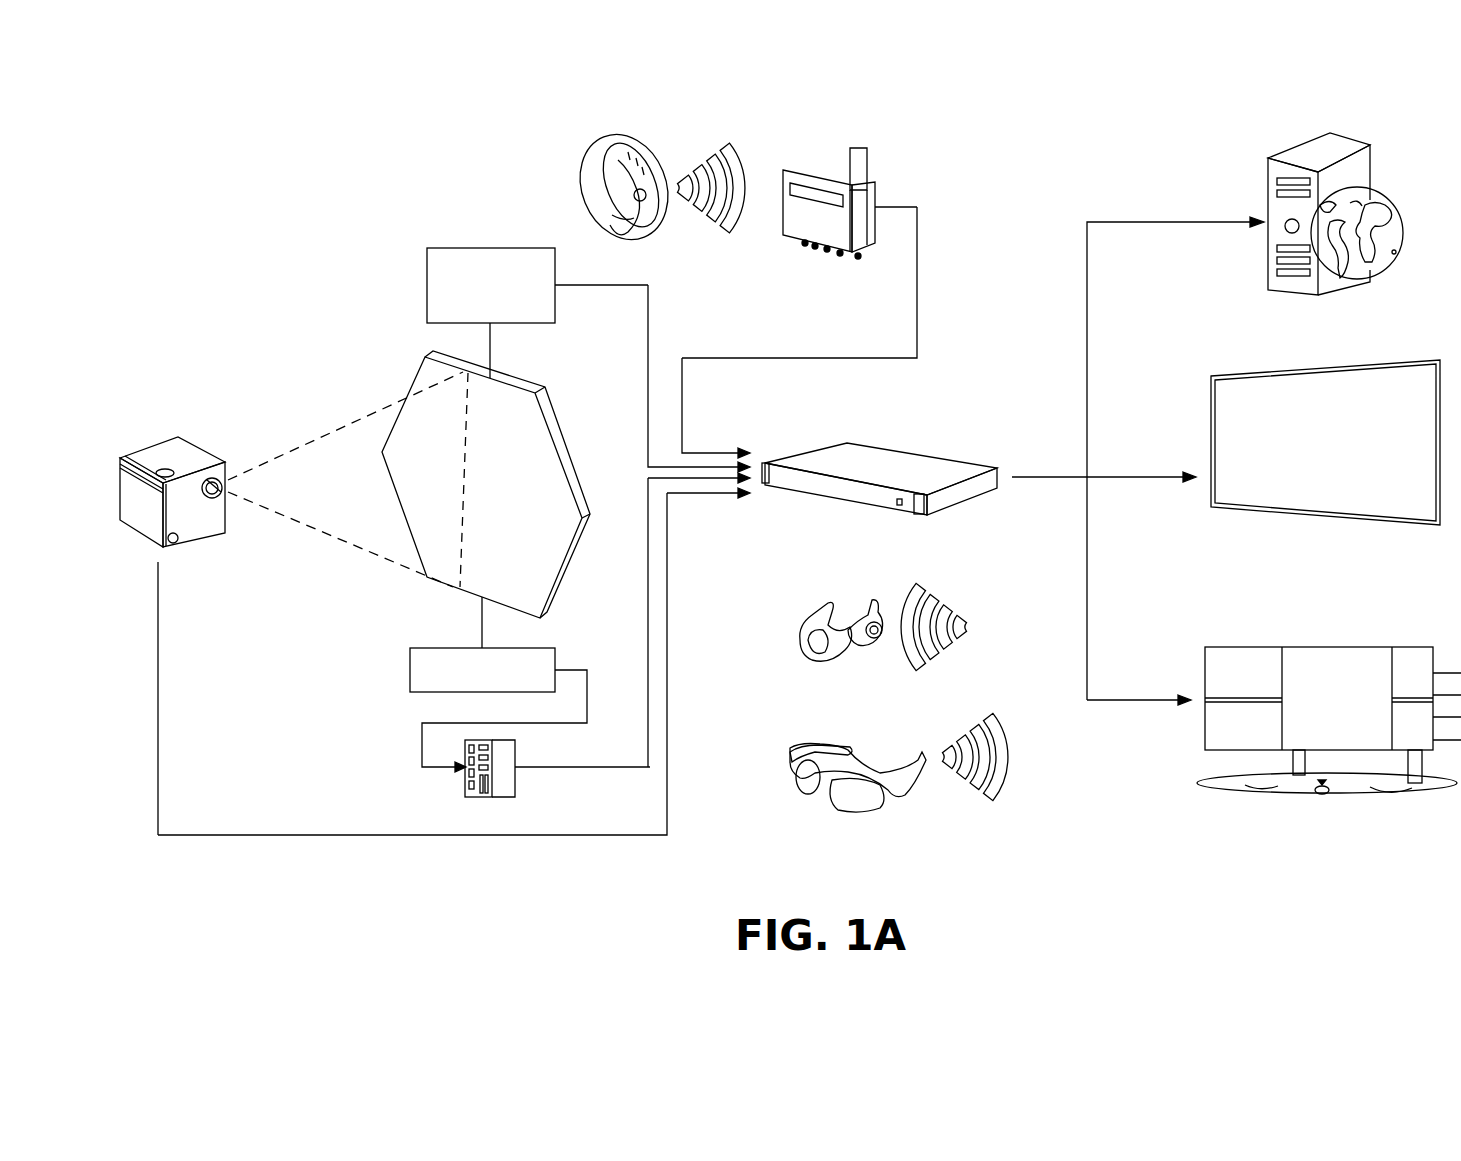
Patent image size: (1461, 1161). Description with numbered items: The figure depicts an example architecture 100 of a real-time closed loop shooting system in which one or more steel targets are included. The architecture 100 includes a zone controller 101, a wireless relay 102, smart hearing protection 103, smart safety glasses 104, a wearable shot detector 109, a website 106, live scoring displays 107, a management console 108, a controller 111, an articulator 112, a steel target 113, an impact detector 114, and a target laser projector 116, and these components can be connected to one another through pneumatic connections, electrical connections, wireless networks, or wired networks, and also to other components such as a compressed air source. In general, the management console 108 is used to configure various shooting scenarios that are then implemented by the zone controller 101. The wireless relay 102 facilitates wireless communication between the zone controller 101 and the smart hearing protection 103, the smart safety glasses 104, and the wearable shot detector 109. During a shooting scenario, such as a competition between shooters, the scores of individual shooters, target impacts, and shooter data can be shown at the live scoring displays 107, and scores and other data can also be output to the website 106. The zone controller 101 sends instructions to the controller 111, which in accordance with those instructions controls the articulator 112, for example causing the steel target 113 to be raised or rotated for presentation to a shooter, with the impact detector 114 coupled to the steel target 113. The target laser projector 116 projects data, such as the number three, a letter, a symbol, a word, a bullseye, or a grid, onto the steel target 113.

The architecture 100 is at (262, 120).
The zone controller 101 is at (835, 491).
The wireless relay 102 is at (808, 232).
The smart hearing protection 103 is at (812, 638).
The smart safety glasses 104 is at (797, 768).
The website 106 is at (1372, 167).
The live scoring displays 107 is at (1410, 360).
The management console 108 is at (1413, 646).
The wearable shot detector 109 is at (642, 237).
The controller 111 is at (466, 778).
The articulator 112 is at (457, 647).
The steel target 113 is at (572, 460).
The impact detector 114 is at (476, 247).
The target laser projector 116 is at (210, 450).